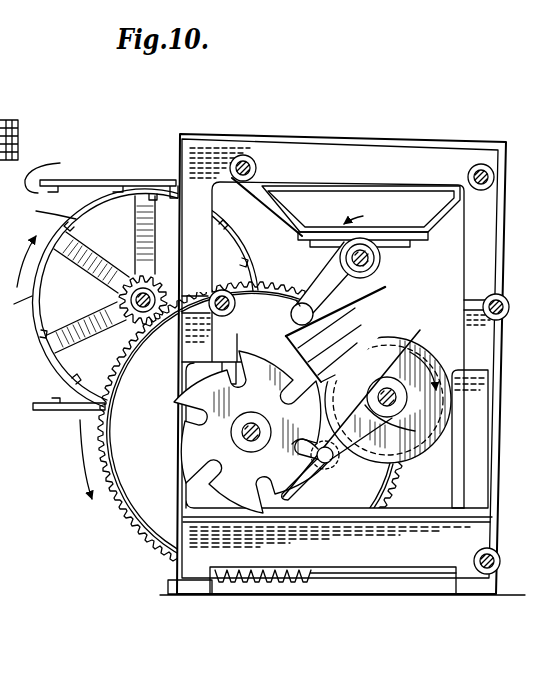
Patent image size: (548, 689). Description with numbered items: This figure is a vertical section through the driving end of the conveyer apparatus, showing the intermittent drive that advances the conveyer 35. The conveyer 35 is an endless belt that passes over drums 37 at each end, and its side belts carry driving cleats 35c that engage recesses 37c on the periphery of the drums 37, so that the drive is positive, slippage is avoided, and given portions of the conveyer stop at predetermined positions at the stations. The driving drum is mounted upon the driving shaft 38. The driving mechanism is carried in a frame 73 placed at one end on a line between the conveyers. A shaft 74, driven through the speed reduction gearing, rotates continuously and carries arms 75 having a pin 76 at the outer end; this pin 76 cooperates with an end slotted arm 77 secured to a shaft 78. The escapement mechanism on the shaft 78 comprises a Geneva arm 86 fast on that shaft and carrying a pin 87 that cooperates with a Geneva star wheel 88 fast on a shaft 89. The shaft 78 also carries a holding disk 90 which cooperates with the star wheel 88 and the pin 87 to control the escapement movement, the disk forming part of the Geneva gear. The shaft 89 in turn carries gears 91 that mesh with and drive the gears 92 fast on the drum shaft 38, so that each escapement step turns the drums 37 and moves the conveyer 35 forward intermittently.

The conveyer 35 is at (104, 180).
The driving cleats 35c is at (61, 169).
The drums 37 is at (16, 301).
The recesses 37c is at (38, 208).
The driving shaft 38 is at (105, 296).
The frame 73 is at (516, 349).
The shaft 74 is at (383, 272).
The arms 75 is at (342, 287).
The pin 76 is at (300, 306).
The end slotted arm 77 is at (372, 328).
The shaft 78 is at (396, 397).
The Geneva arm 86 is at (400, 458).
The pin 87 is at (332, 464).
The Geneva star wheel 88 is at (312, 478).
The shaft 89 is at (250, 452).
The holding disk 90 is at (420, 433).
The gears 91 is at (145, 526).
The gears 92 is at (132, 276).